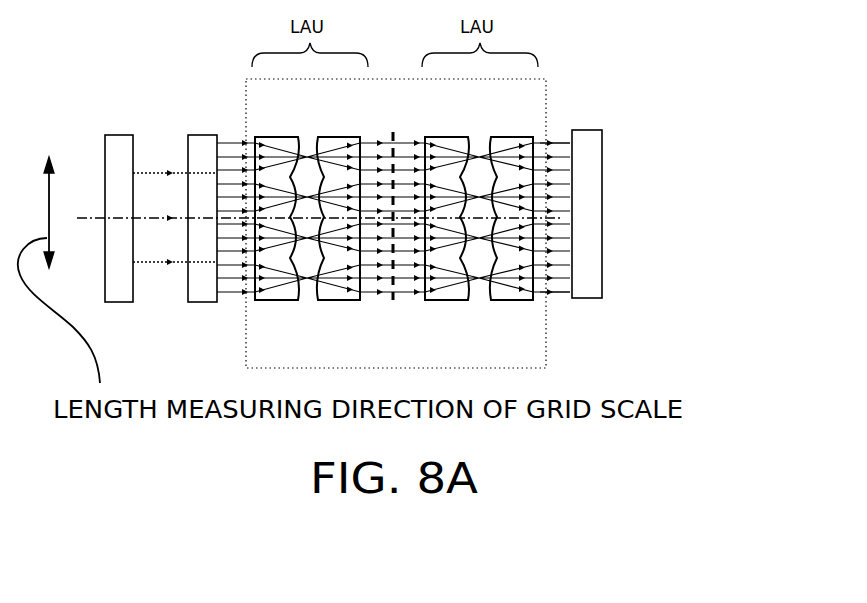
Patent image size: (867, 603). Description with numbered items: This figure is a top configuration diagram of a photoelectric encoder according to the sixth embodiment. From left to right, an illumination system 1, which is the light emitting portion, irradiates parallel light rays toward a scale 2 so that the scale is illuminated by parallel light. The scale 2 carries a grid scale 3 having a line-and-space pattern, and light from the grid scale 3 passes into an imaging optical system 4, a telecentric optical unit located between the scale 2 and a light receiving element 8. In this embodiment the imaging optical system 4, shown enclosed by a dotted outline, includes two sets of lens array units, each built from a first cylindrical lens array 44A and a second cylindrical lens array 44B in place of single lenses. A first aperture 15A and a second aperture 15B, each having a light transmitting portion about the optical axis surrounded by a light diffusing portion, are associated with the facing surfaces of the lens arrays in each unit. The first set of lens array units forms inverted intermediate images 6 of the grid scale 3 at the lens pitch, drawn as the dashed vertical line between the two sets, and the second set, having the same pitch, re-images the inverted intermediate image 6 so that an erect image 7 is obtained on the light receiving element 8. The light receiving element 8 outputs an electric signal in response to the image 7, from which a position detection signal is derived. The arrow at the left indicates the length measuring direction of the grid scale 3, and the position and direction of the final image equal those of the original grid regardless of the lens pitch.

The illumination system 1 is at (105, 135).
The scale 2 is at (188, 135).
The grid scale 3 is at (222, 138).
The imaging optical system 4 is at (548, 353).
The inverted intermediate image 6 is at (398, 135).
The image 7 is at (568, 142).
The light receiving element 8 is at (602, 130).
The first aperture 15A is at (301, 137).
The second aperture 15B is at (316, 137).
The first cylindrical lens array 44A is at (369, 227).
The second cylindrical lens array 44B is at (418, 227).